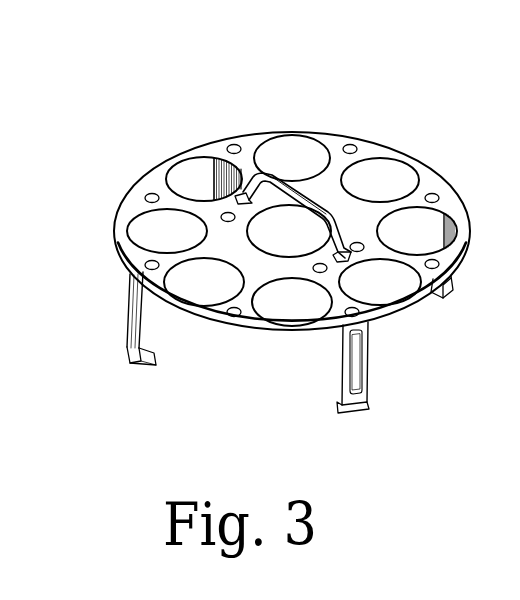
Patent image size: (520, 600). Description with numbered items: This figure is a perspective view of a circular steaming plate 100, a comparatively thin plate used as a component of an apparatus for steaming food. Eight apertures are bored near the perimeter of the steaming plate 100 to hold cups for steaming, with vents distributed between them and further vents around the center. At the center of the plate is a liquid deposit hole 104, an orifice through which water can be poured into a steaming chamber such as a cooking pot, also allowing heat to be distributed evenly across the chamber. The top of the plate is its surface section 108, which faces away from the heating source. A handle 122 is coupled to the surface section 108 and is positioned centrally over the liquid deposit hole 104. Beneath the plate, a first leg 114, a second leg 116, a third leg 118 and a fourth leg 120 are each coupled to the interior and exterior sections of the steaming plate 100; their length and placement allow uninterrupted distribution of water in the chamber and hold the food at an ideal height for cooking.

The steaming plate 100 is at (368, 70).
The liquid deposit hole 104 is at (308, 243).
The surface section 108 is at (213, 170).
The first leg 114 is at (220, 230).
The second leg 116 is at (128, 332).
The third leg 118 is at (370, 386).
The fourth leg 120 is at (456, 276).
The handle 122 is at (305, 193).